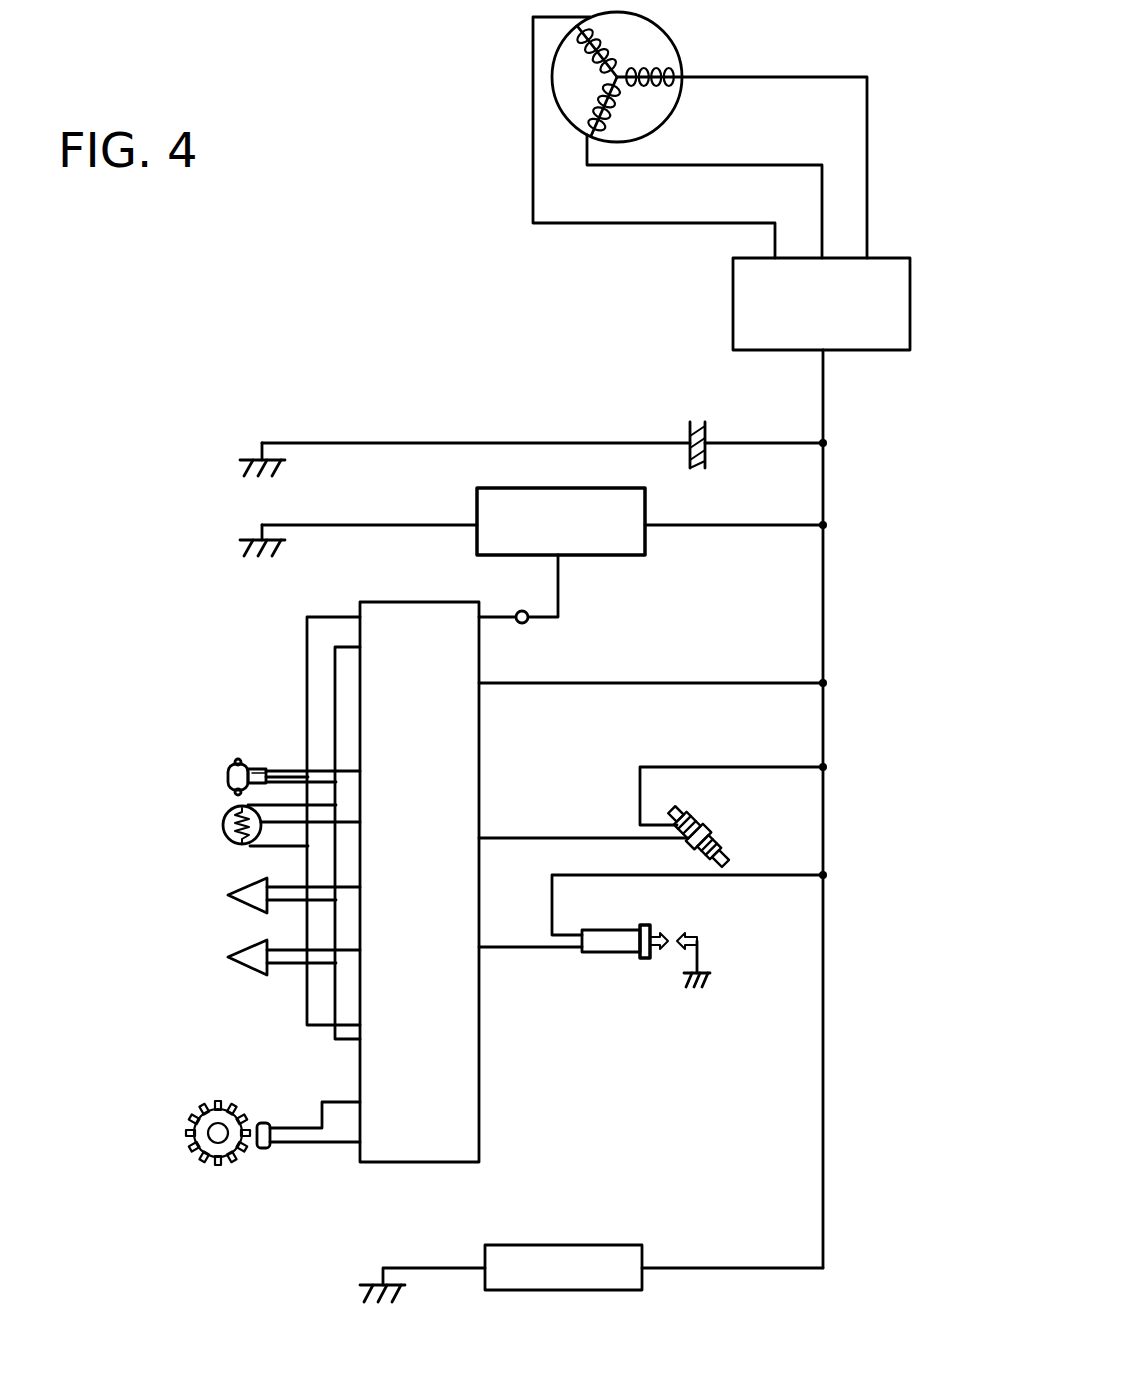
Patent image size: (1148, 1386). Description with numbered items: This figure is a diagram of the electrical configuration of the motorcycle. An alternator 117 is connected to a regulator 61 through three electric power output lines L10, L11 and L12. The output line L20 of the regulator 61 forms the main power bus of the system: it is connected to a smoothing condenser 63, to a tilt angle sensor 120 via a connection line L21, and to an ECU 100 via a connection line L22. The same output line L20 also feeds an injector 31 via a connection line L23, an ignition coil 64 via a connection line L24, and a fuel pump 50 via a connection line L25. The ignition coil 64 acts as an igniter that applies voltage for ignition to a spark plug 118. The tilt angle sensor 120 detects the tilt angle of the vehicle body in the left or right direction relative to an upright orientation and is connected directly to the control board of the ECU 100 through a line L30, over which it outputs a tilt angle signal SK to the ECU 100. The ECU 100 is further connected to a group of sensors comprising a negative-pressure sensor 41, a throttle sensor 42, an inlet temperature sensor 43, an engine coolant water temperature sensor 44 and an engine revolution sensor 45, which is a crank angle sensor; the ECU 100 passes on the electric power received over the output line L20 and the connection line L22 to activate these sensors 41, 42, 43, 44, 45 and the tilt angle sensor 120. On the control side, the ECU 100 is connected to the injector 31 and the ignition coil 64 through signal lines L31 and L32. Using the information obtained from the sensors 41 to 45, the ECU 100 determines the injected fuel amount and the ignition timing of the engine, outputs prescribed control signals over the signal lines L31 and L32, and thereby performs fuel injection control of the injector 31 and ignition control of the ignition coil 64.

The alternator 117 is at (672, 38).
The output line L10 is at (813, 77).
The output line L11 is at (770, 165).
The output line L12 is at (715, 223).
The regulator 61 is at (891, 258).
The condenser 63 is at (707, 432).
The tilt angle sensor 120 is at (567, 488).
The connection line L21 is at (738, 525).
The ECU 100 is at (421, 602).
The tilt angle signal SK is at (522, 611).
The line L30 is at (558, 593).
The connection line L22 is at (740, 683).
The connection line L23 is at (740, 767).
The signal line L31 is at (550, 838).
The injector 31 is at (712, 826).
The connection line L24 is at (760, 875).
The spark plug 118 is at (675, 935).
The signal line L32 is at (530, 947).
The ignition coil 64 is at (610, 952).
The output line L20 is at (824, 970).
The negative-pressure sensor 41 is at (228, 767).
The throttle sensor 42 is at (223, 823).
The inlet temperature sensor 43 is at (230, 893).
The engine coolant water temperature sensor 44 is at (231, 957).
The engine revolution sensor 45 is at (190, 1141).
The fuel pump 50 is at (574, 1245).
The connection line L25 is at (743, 1268).